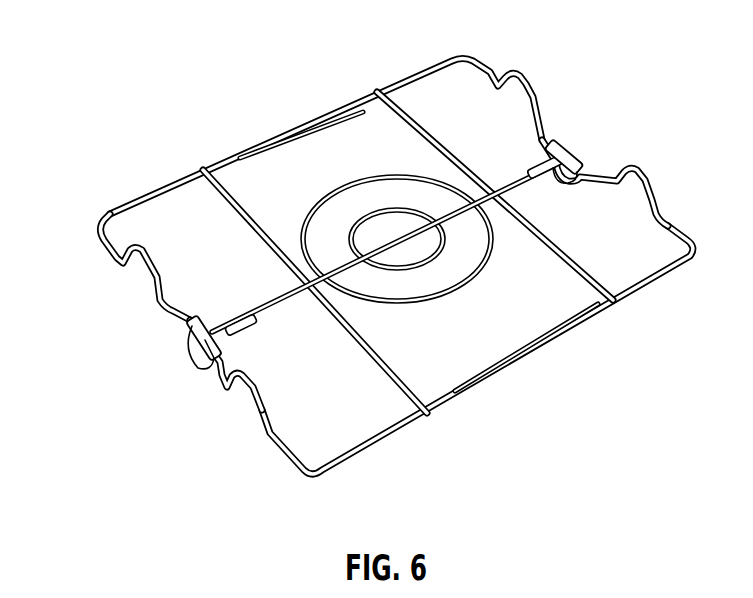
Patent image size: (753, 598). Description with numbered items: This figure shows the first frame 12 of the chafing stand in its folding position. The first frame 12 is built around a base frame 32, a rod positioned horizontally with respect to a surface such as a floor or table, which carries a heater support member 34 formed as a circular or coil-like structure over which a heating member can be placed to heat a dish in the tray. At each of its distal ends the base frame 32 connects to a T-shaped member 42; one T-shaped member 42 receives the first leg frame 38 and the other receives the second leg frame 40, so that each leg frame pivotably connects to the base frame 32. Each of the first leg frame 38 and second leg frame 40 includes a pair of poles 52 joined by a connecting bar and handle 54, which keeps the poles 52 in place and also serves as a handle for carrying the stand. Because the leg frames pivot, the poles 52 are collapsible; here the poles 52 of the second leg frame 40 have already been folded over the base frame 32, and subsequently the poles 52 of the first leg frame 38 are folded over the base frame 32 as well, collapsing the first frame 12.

The first frame 12 is at (377, 243).
The base frame 32 is at (503, 183).
The heater support member 34 is at (339, 183).
The first leg frame 38 is at (250, 393).
The second leg frame 40 is at (640, 177).
The T-shaped member 42 is at (234, 322).
The pole 52 is at (661, 281).
The connecting bar and handle 54 is at (378, 362).